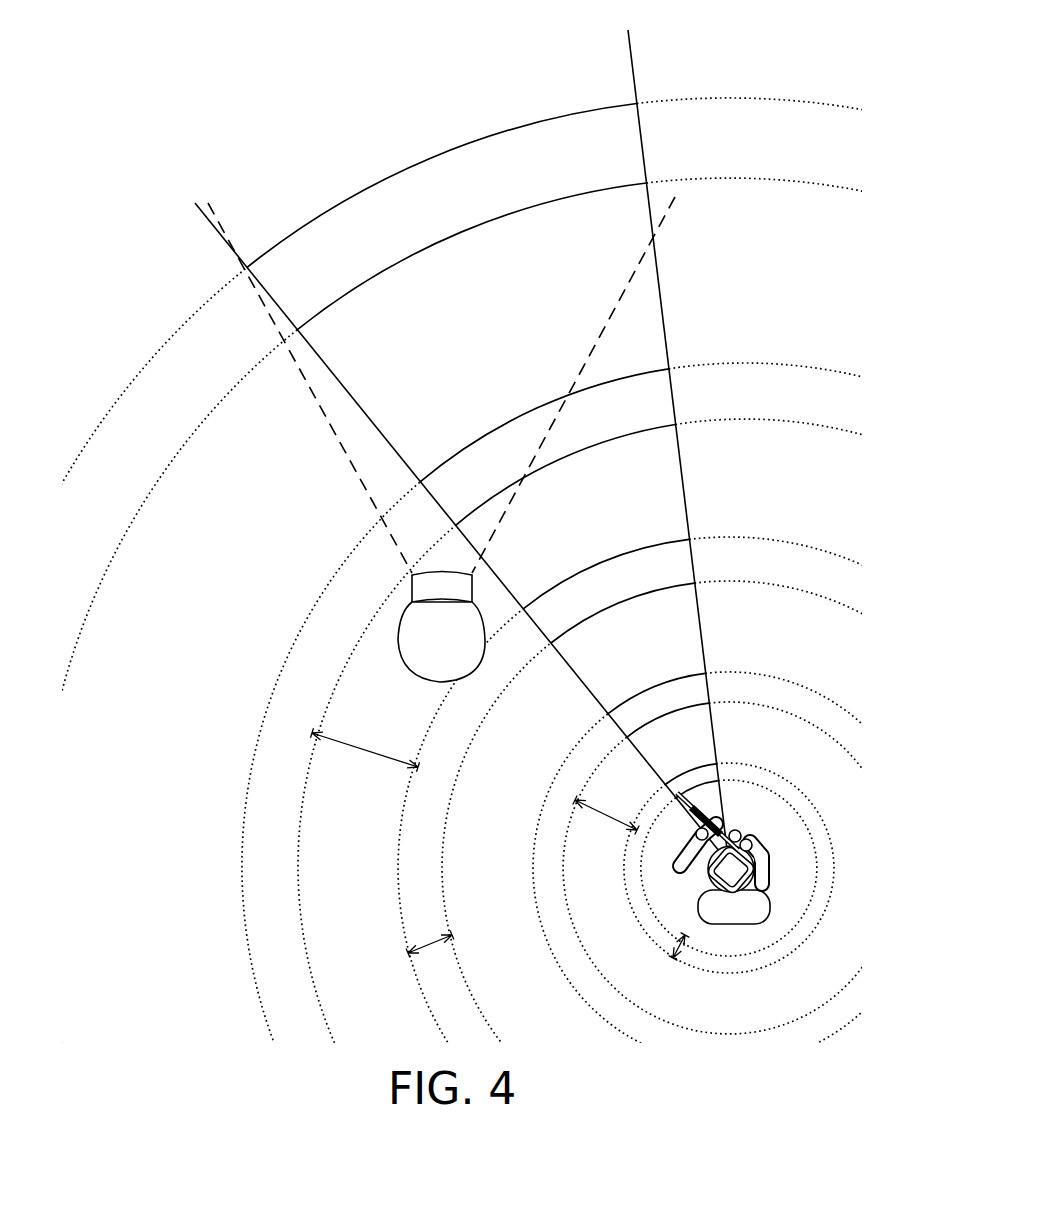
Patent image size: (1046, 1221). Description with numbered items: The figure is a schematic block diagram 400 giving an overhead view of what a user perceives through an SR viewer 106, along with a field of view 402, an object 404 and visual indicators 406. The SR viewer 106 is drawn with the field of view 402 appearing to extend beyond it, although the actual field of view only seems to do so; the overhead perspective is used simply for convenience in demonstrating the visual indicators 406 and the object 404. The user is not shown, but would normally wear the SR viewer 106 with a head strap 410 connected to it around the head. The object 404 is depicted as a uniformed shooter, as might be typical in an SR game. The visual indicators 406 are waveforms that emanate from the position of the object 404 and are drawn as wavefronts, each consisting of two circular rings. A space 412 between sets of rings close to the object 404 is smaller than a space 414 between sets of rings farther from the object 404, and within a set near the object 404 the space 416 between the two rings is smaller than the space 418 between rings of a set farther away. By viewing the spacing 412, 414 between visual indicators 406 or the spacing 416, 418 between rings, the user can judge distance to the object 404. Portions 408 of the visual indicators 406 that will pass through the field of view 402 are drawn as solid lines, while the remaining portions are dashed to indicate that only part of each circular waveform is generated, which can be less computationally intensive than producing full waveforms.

The schematic block diagram 400 is at (190, 112).
The field of view 402 is at (343, 447).
The SR viewer 106 is at (412, 590).
The object 404 is at (677, 859).
The visual indicators 406 is at (540, 825).
The portion of the visual indicators 408 is at (591, 700).
The head strap 410 is at (402, 672).
The space between sets of rings 412 is at (672, 949).
The space between sets of rings 414 is at (365, 753).
The space between rings 416 is at (676, 958).
The space between rings 418 is at (430, 951).